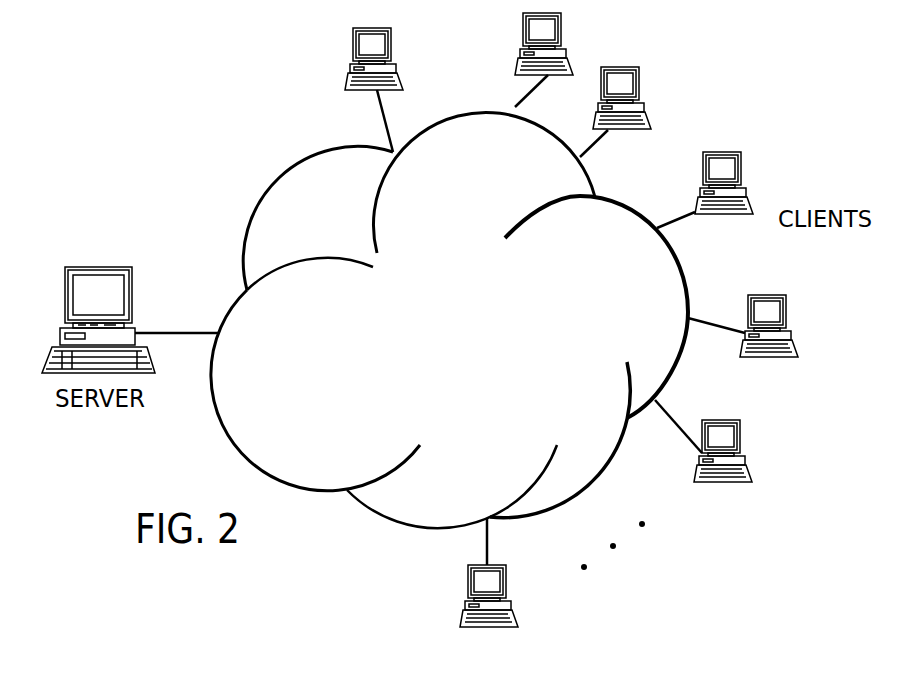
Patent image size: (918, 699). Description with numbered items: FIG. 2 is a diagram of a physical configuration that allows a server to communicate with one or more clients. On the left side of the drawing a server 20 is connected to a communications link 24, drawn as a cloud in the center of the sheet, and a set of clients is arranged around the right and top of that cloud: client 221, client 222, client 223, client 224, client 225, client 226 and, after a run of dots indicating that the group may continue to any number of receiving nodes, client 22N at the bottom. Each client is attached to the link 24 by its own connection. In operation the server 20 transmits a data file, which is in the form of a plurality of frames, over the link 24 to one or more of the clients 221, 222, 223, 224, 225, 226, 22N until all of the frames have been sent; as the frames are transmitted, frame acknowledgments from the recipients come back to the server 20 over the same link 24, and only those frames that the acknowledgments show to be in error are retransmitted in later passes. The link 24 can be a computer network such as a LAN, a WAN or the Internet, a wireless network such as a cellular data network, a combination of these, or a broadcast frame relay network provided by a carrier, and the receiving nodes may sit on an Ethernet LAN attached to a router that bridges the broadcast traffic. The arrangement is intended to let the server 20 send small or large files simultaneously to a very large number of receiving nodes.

The server 20 is at (122, 268).
The client N 22N is at (468, 573).
The client 1 221 is at (390, 37).
The client 2 222 is at (565, 25).
The client 3 223 is at (640, 83).
The client 4 224 is at (742, 168).
The client 5 225 is at (768, 295).
The client 6 226 is at (740, 431).
The communications link 24 is at (471, 343).